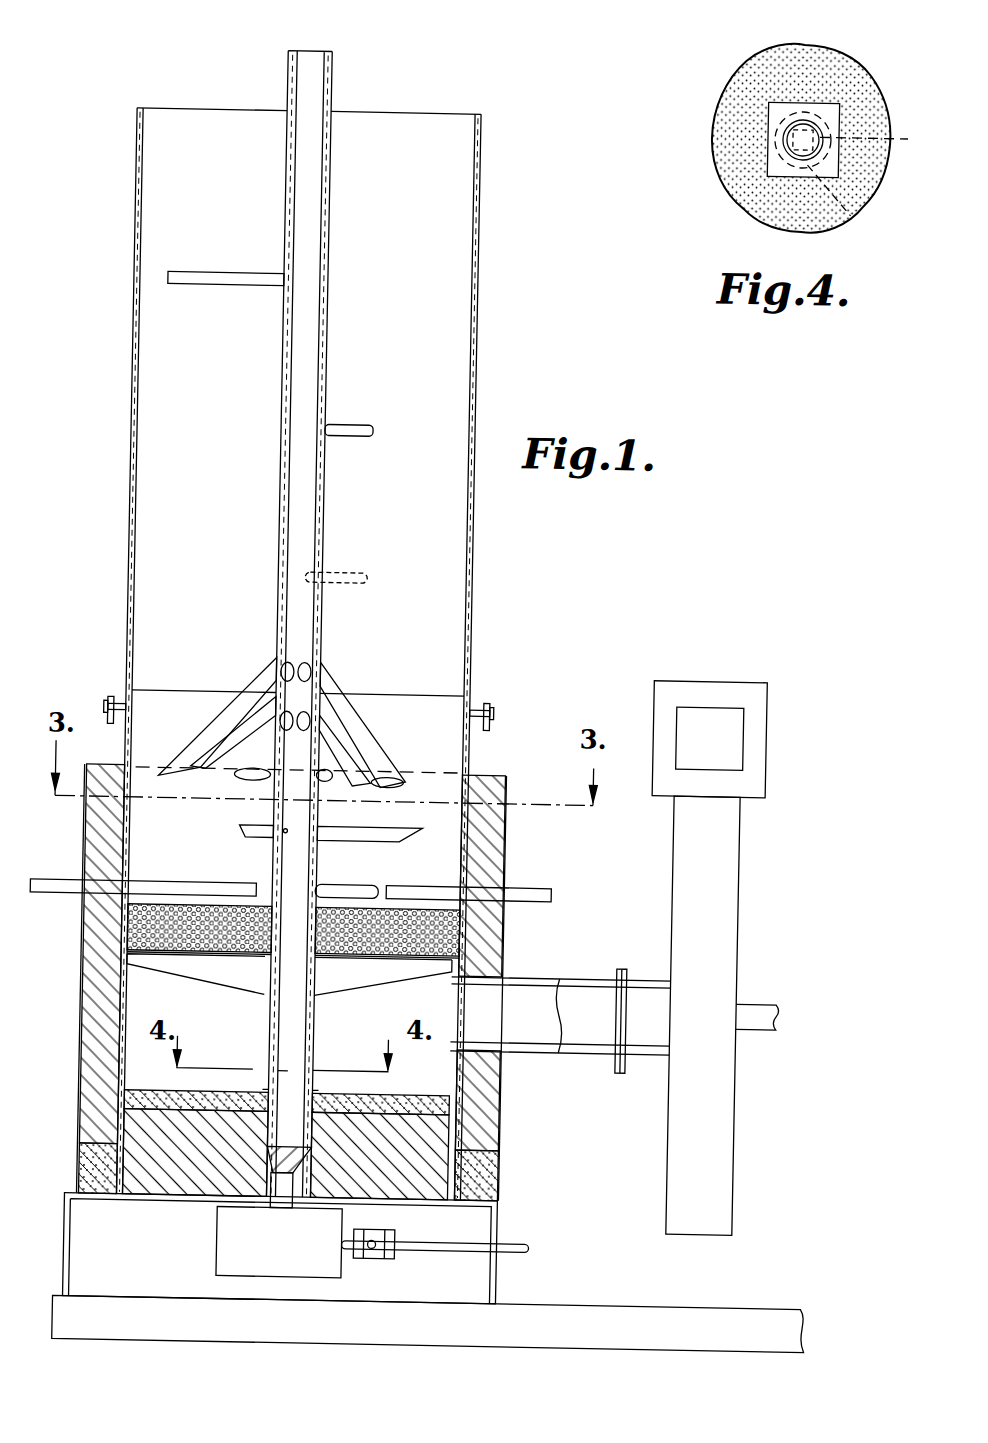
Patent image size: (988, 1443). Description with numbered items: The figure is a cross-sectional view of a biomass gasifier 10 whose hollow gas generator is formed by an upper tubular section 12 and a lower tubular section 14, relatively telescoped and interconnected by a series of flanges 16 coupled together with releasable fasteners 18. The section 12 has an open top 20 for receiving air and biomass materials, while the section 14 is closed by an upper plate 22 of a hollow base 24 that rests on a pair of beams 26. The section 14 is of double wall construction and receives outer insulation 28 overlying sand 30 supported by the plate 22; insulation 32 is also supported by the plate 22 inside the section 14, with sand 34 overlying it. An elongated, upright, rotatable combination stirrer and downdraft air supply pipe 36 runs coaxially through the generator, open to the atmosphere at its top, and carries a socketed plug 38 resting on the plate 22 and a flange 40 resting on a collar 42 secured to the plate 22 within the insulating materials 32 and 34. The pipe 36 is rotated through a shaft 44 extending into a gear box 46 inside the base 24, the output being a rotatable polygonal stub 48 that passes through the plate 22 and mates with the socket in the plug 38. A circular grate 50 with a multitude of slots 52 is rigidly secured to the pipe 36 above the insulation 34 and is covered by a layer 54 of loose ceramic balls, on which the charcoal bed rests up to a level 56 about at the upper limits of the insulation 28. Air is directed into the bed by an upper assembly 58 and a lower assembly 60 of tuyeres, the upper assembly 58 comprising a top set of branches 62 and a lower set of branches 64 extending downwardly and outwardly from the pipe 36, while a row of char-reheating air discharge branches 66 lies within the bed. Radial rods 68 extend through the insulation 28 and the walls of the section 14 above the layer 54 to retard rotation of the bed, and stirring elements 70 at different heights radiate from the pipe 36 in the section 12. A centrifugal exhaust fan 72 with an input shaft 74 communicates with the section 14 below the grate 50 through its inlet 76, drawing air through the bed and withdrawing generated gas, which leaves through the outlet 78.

In FIG. 1, the gasifier 10 is at (500, 378).
In FIG. 1, the upper tubular section 12 is at (480, 226).
In FIG. 1, the lower tubular section 14 is at (478, 748).
In FIG. 1, the flanges 16 is at (478, 706).
In FIG. 1, the releasable fasteners 18 is at (489, 720).
In FIG. 1, the open top 20 is at (372, 108).
In FIG. 1, the upper plate 22 is at (148, 1204).
In FIG. 1, the hollow base 24 is at (520, 1204).
In FIG. 1, the beams 26 is at (614, 1300).
In FIG. 1, the outer insulation 28 is at (495, 930).
In FIG. 1, the sand 30 is at (495, 1155).
In FIG. 1, the insulation 32 is at (135, 1136).
In FIG. 1, the sand 34 is at (390, 1094).
In FIG. 4, the sand 34 is at (727, 137).
In FIG. 1, the combination stirrer and downdraft air supply pipe 36 is at (274, 455).
In FIG. 4, the combination stirrer and downdraft air supply pipe 36 is at (796, 130).
In FIG. 1, the socketed plug 38 is at (270, 1155).
In FIG. 4, the socketed plug 38 is at (785, 155).
In FIG. 1, the flange 40 is at (330, 1092).
In FIG. 4, the flange 40 is at (832, 110).
In FIG. 1, the collar 42 is at (328, 1144).
In FIG. 4, the collar 42 is at (875, 153).
In FIG. 1, the shaft 44 is at (448, 1249).
In FIG. 1, the gear box 46 is at (312, 1279).
In FIG. 1, the polygonal stub 48 is at (290, 1210).
In FIG. 4, the polygonal stub 48 is at (858, 212).
In FIG. 1, the grate 50 is at (221, 970).
In FIG. 1, the slots 52 is at (378, 960).
In FIG. 1, the layer of discrete elements 54 is at (137, 918).
In FIG. 1, the level 56 is at (153, 768).
In FIG. 1, the upper assembly of tuyeres 58 is at (347, 668).
In FIG. 1, the lower assembly of tuyeres 60 is at (363, 738).
In FIG. 1, the top set of branches 62 is at (256, 686).
In FIG. 1, the lower set of branches 64 is at (250, 781).
In FIG. 1, the air discharge branches 66 is at (376, 840).
In FIG. 1, the radial rods 68 is at (165, 884).
In FIG. 1, the stirring elements 70 is at (190, 273).
In FIG. 1, the centrifugal exhaust fan 72 is at (752, 850).
In FIG. 1, the input shaft 74 is at (781, 1022).
In FIG. 1, the inlet 76 is at (599, 978).
In FIG. 1, the outlet 78 is at (706, 710).